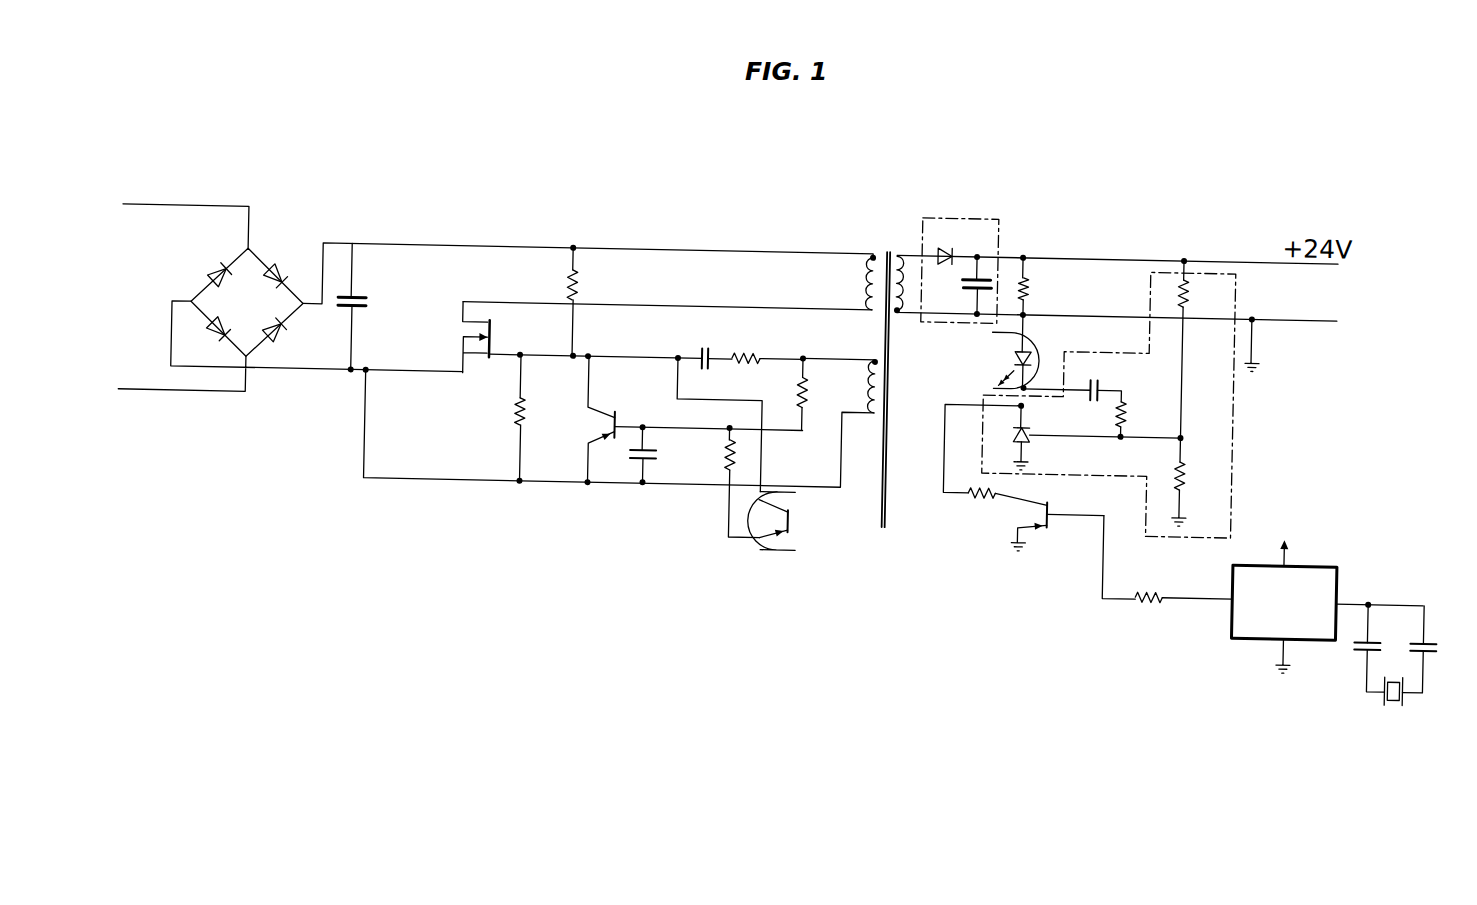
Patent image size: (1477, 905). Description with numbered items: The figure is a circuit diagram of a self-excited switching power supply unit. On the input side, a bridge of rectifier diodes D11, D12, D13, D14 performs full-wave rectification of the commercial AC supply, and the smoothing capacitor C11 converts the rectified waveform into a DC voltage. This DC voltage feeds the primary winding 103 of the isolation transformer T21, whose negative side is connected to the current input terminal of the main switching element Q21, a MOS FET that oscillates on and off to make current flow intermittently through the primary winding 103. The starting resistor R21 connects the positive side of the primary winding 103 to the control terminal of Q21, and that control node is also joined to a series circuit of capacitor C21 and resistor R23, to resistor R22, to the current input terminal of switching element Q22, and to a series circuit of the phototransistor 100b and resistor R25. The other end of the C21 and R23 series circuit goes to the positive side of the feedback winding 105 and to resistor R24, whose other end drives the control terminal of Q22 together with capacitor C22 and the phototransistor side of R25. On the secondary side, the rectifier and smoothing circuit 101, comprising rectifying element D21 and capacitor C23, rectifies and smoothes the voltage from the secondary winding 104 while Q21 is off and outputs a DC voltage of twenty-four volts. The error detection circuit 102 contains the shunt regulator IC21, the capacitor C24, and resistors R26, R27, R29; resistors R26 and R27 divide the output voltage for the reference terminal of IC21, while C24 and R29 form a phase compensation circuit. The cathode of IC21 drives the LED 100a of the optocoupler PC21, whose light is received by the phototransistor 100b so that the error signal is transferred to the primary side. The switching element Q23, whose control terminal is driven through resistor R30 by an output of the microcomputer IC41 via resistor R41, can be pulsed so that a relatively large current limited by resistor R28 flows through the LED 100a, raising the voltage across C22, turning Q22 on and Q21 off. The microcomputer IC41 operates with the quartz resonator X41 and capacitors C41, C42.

The rectifier diode D11 is at (222, 282).
The rectifier diode D12 is at (270, 280).
The rectifier diode D13 is at (212, 338).
The rectifier diode D14 is at (283, 355).
The smoothing capacitor C11 is at (360, 305).
The starting resistor R21 is at (547, 301).
The main switching element Q21 is at (506, 338).
The resistor R22 is at (493, 417).
The switching element Q22 is at (673, 420).
The capacitor C21 is at (703, 344).
The resistor R23 is at (756, 342).
The resistor R24 is at (812, 376).
The capacitor C22 is at (642, 470).
The resistor R25 is at (728, 470).
The isolation transformer T21 is at (876, 373).
The primary winding 103 is at (862, 268).
The secondary winding 104 is at (904, 262).
The feedback winding 105 is at (872, 403).
The rectifying element D21 is at (944, 248).
The rectifier and smoothing circuit 101 is at (979, 217).
The capacitor C23 is at (988, 275).
The resistor R28 is at (1052, 305).
The optocoupler PC21 is at (935, 448).
The LED 100a is at (1043, 357).
The phototransistor 100b is at (800, 524).
The capacitor C24 is at (1097, 377).
The shunt regulator IC21 is at (1032, 440).
The resistor R26 is at (1192, 284).
The resistor R27 is at (1194, 462).
The resistor R29 is at (1140, 412).
The error detection circuit 102 is at (1189, 531).
The resistor R30 is at (983, 508).
The switching element Q23 is at (1057, 529).
The resistor R41 is at (1139, 615).
The microcomputer IC41 is at (1284, 591).
The capacitor C41 is at (1347, 648).
The capacitor C42 is at (1439, 650).
The quartz resonator X41 is at (1395, 707).